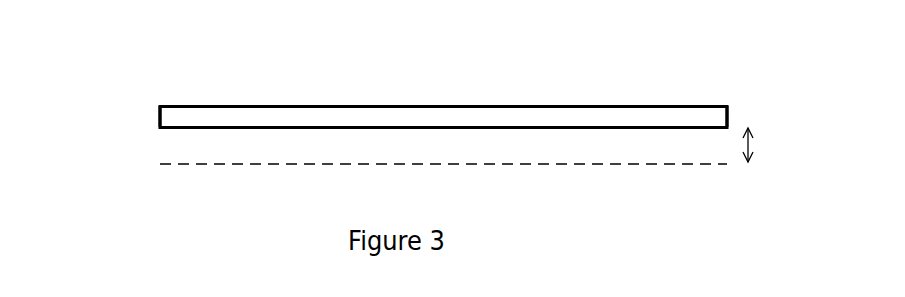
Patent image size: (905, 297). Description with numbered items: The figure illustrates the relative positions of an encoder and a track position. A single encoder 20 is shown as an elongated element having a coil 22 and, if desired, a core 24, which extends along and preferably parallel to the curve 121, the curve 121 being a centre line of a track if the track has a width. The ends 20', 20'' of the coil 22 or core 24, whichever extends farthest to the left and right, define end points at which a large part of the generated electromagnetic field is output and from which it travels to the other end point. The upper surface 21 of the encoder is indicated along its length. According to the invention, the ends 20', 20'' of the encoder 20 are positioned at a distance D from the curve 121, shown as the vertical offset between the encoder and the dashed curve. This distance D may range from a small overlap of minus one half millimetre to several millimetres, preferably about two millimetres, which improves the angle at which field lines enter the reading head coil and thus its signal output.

The encoder 20 is at (391, 101).
The end of the coil or core 20' is at (144, 84).
The end of the coil or core 20'' is at (714, 85).
The upper surface of the plate 21 is at (298, 107).
The coil 22 is at (620, 112).
The core 24 is at (477, 117).
The curve 121 is at (210, 167).
The distance D is at (770, 145).